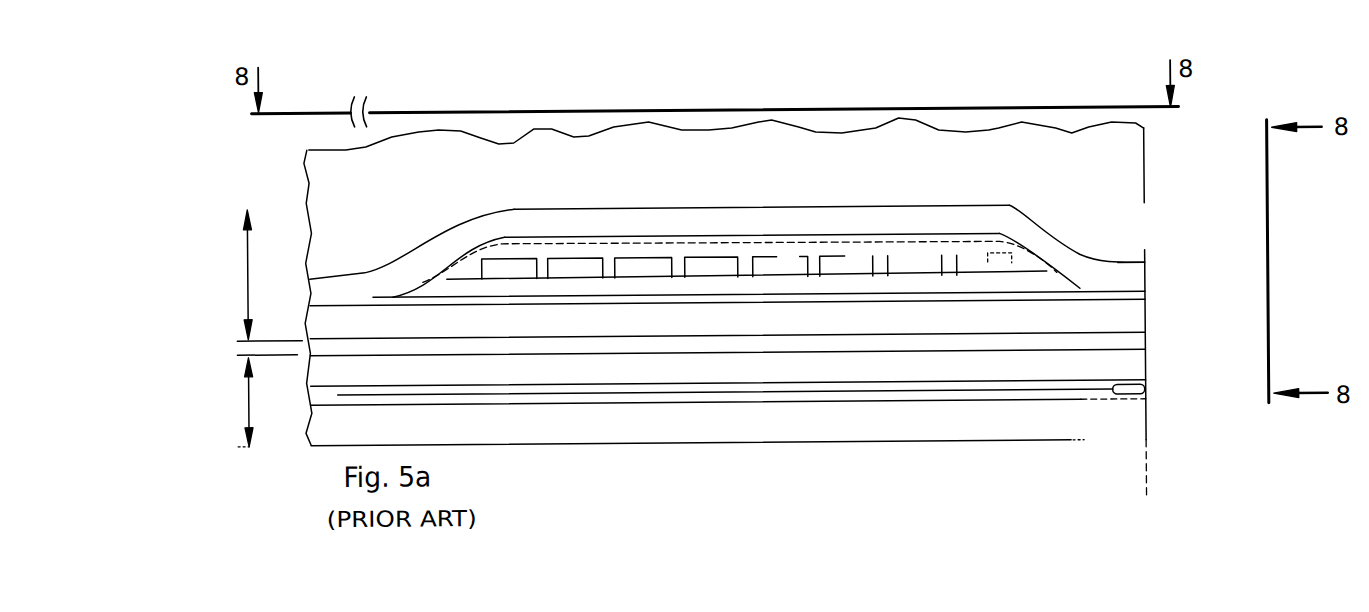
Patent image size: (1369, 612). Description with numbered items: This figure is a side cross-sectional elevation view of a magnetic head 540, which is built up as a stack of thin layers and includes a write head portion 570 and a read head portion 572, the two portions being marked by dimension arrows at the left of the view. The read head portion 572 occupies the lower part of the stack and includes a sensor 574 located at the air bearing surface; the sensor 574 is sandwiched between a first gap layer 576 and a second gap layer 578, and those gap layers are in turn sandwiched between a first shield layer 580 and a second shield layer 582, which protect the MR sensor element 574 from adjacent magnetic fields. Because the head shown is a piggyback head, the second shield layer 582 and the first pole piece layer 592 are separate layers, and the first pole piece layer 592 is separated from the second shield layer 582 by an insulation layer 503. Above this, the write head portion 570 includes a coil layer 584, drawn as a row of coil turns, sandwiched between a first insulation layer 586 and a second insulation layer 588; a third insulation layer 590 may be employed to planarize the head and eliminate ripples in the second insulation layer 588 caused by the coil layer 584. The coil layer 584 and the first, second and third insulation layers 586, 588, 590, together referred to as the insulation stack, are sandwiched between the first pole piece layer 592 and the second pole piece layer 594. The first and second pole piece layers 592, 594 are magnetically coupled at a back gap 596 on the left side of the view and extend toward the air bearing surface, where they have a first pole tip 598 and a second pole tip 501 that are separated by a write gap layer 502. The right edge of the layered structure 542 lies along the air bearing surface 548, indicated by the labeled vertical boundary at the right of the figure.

The magnetic head 540 is at (282, 158).
The head boundary at air bearing surface 542 is at (1130, 159).
The air bearing surface (ABS) 548 is at (1145, 483).
The write head portion 570 is at (246, 276).
The read head portion 572 is at (247, 403).
The sensor 574 is at (1145, 388).
The first gap layer 576 is at (788, 403).
The second gap layer 578 is at (762, 380).
The first shield layer 580 is at (928, 430).
The second shield layer 582 is at (995, 372).
The coil layer 584 is at (777, 263).
The first insulation layer 586 is at (682, 286).
The second insulation layer 588 is at (1033, 260).
The third insulation layer 590 is at (549, 242).
The first pole piece layer 592 is at (1060, 325).
The second pole piece layer 594 is at (920, 218).
The back gap 596 is at (346, 270).
The first pole tip 598 is at (1147, 321).
The second pole tip 501 is at (1140, 275).
The write gap layer 502 is at (1147, 297).
The insulation layer 503 is at (617, 346).